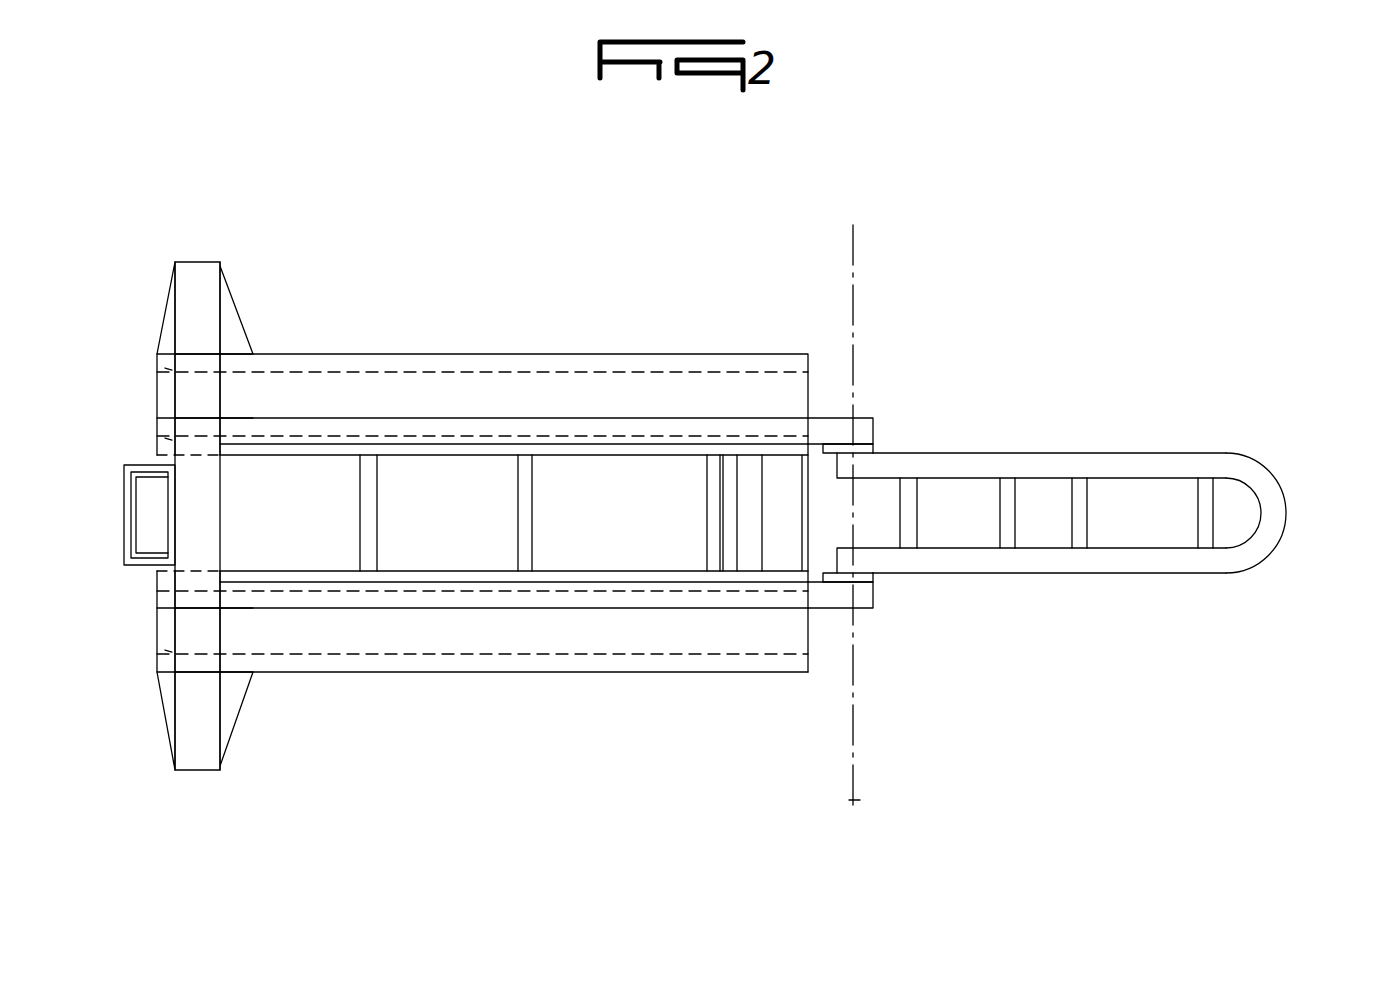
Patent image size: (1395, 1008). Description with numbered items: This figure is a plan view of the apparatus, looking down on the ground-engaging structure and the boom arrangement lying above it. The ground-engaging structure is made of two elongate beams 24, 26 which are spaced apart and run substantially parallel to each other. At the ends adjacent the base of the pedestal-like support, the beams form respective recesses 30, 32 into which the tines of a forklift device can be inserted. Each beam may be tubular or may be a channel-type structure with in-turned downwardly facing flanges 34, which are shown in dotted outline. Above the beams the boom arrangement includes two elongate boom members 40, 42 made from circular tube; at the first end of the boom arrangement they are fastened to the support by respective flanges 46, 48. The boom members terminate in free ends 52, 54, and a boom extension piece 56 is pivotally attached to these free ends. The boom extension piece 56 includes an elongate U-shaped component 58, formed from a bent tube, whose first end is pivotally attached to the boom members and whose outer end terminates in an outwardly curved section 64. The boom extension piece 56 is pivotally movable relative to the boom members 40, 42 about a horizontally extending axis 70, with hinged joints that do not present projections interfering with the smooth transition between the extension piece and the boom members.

The elongate beam 24 is at (790, 354).
The elongate beam 26 is at (773, 664).
The recess 30 is at (155, 393).
The recess 32 is at (155, 630).
The in-turned downwardly facing flanges 34 is at (530, 656).
The elongate boom member 40 is at (873, 418).
The elongate boom member 42 is at (858, 592).
The flange 46 is at (222, 422).
The flange 48 is at (224, 610).
The free end 52 is at (885, 428).
The free end 54 is at (880, 590).
The boom extension piece 56 is at (1190, 580).
The U-shaped component 58 is at (1265, 556).
The outwardly curved section 64 is at (1280, 511).
The horizontally extending axis 70 is at (856, 800).